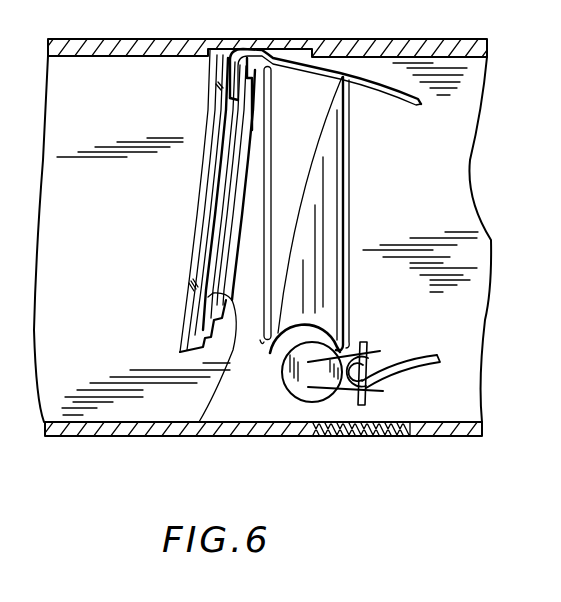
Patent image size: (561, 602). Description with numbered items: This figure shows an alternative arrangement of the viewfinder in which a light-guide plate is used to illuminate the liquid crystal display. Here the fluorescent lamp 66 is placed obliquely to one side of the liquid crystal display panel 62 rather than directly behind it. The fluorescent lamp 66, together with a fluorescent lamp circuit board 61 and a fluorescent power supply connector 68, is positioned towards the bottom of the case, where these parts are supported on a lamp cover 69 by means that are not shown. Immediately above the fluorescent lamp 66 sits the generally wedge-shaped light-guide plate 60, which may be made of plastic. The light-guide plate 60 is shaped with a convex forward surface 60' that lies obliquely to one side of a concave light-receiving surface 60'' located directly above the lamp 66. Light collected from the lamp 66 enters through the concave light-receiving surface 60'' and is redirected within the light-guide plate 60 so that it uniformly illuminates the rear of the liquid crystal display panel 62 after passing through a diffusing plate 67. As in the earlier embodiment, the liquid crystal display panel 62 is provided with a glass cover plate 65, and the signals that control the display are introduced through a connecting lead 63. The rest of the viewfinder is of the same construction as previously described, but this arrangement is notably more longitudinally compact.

The light-guide plate 60 is at (263, 280).
The convex forward surface 60' is at (313, 213).
The concave light-receiving surface 60'' is at (334, 320).
The fluorescent lamp circuit board 61 is at (366, 343).
The liquid crystal display panel 62 is at (199, 422).
The connecting lead 63 is at (258, 49).
The cover plate 65 is at (186, 297).
The fluorescent lamp 66 is at (310, 402).
The diffusing plate 67 is at (262, 343).
The fluorescent power supply connector 68 is at (419, 368).
The lamp cover 69 is at (343, 437).